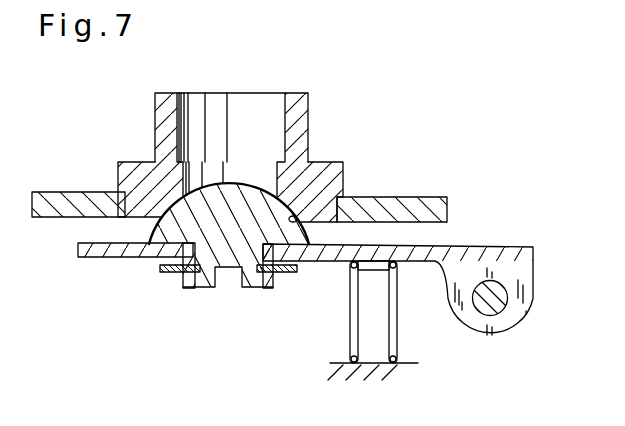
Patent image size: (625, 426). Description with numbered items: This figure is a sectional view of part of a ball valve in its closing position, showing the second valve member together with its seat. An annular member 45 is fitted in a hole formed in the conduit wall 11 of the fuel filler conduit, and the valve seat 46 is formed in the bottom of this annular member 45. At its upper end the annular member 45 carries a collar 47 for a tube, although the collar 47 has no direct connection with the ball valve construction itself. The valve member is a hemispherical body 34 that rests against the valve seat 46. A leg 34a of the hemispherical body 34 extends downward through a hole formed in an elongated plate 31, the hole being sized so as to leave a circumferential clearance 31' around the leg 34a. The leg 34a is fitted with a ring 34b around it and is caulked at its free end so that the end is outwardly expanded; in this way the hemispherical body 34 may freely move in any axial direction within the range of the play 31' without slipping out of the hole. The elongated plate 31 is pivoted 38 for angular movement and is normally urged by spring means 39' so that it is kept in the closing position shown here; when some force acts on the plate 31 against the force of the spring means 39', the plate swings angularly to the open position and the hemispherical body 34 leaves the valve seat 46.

The conduit wall 11 is at (430, 207).
The elongated plate 31 is at (314, 270).
The circumferential clearance 31' is at (251, 287).
The hemispherical body 34 is at (247, 196).
The leg 34a is at (208, 285).
The ring 34b is at (171, 274).
The pivot 38 is at (502, 307).
The spring means 39' is at (344, 324).
The annular member 45 is at (331, 173).
The valve seat 46 is at (343, 198).
The collar 47 is at (304, 103).